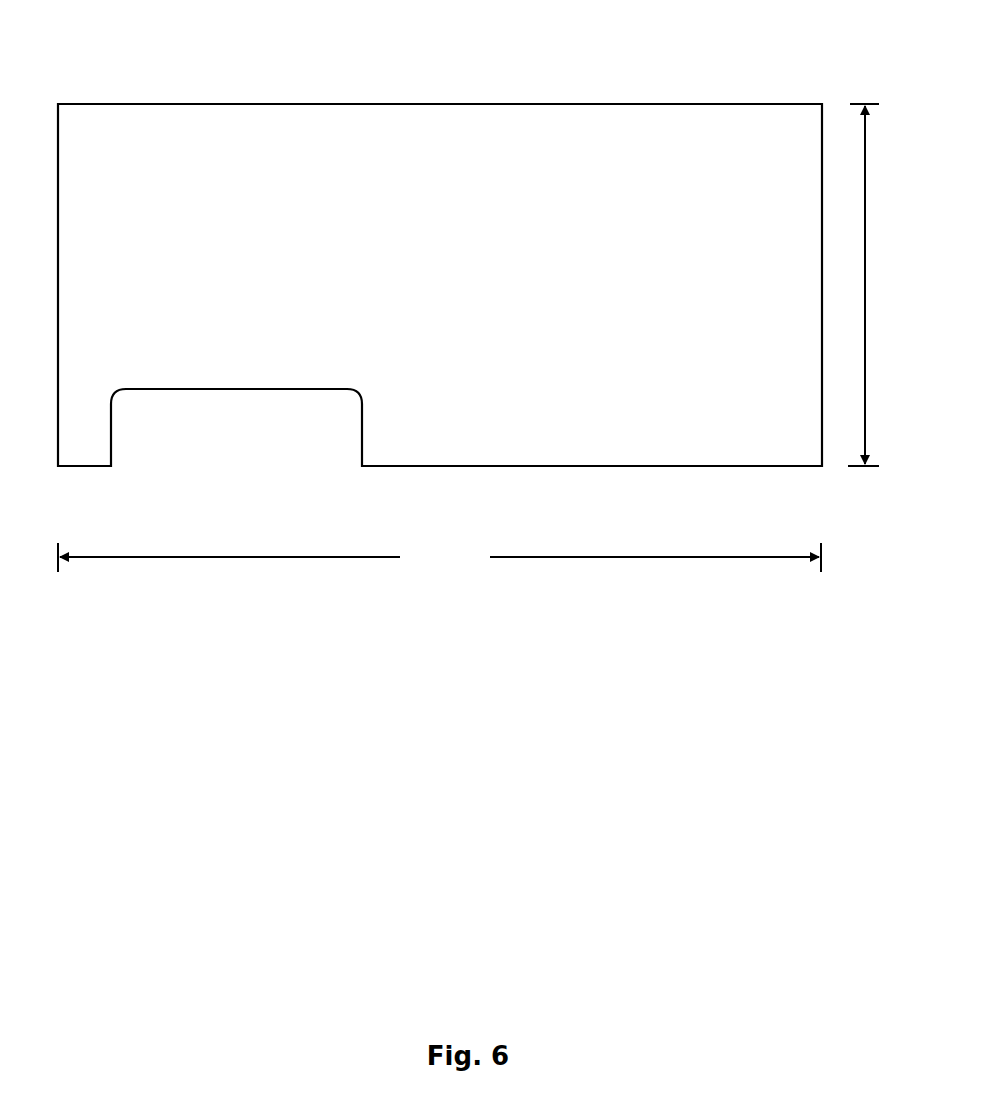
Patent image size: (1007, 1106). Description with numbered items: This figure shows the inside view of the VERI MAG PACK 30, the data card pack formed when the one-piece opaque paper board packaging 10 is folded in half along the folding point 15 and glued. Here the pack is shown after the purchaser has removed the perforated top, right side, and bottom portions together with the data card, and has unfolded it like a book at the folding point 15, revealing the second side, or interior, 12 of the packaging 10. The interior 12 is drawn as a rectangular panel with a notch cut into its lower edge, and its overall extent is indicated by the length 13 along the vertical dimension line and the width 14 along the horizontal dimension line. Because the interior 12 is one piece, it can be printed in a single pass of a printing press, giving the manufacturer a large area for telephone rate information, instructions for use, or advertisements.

The packaging 10 is at (252, 101).
The second side (interior) 12 is at (440, 285).
The length 13 is at (865, 225).
The width 14 is at (366, 557).
The folding point 15 is at (437, 104).
The VERI MAG PACK 30 is at (667, 469).